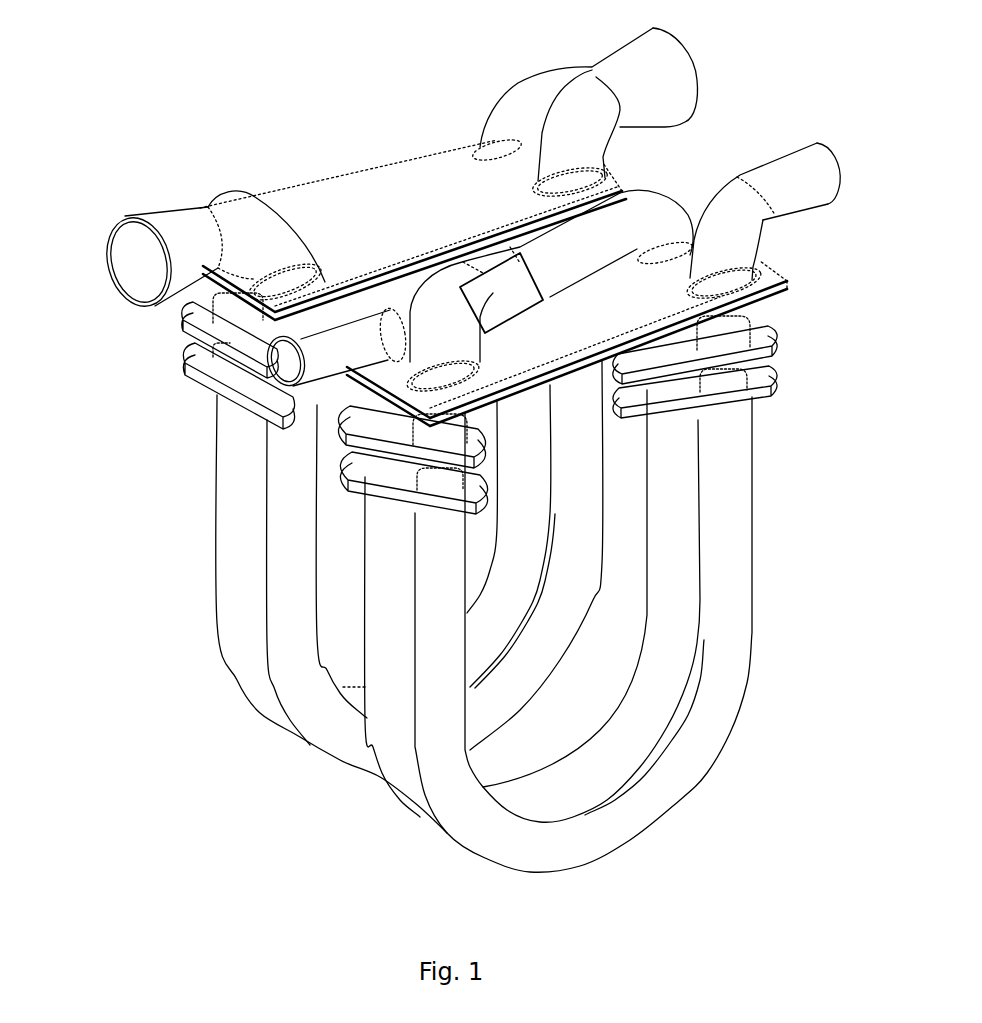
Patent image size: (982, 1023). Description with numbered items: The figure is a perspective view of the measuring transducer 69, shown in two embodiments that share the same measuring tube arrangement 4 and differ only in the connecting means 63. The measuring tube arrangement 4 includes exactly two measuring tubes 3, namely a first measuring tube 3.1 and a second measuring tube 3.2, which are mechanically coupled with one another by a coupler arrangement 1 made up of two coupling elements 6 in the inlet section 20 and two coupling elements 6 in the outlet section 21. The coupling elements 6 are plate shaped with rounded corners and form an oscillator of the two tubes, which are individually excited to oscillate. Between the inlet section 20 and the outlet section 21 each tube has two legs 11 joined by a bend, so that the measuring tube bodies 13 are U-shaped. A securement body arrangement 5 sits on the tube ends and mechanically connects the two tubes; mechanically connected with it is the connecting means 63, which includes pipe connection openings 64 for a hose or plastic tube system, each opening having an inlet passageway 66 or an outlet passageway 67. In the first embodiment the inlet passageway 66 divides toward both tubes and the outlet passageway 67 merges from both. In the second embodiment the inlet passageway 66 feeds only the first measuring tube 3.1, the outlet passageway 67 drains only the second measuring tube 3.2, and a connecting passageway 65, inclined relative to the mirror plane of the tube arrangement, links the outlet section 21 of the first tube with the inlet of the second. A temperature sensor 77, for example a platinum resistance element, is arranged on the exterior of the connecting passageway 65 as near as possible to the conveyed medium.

The coupler arrangement 1 is at (388, 478).
The measuring tubes 3 is at (709, 763).
The first measuring tube 3.1 is at (400, 760).
The second measuring tube 3.2 is at (720, 667).
The measuring tube arrangement 4 is at (256, 752).
The securement body arrangement 5 is at (683, 328).
The coupling elements 6 is at (740, 402).
The legs 11 is at (429, 635).
The measuring tube bodies 13 is at (528, 861).
The inlet section 20 is at (400, 406).
The outlet section 21 is at (737, 330).
The connecting means 63 is at (397, 190).
The pipe connection openings 64 is at (138, 273).
The connecting passageway 65 is at (547, 283).
The inlet passageway 66 is at (332, 333).
The outlet passageway 67 is at (733, 225).
The measuring transducer 69 is at (200, 133).
The temperature sensor 77 is at (501, 290).